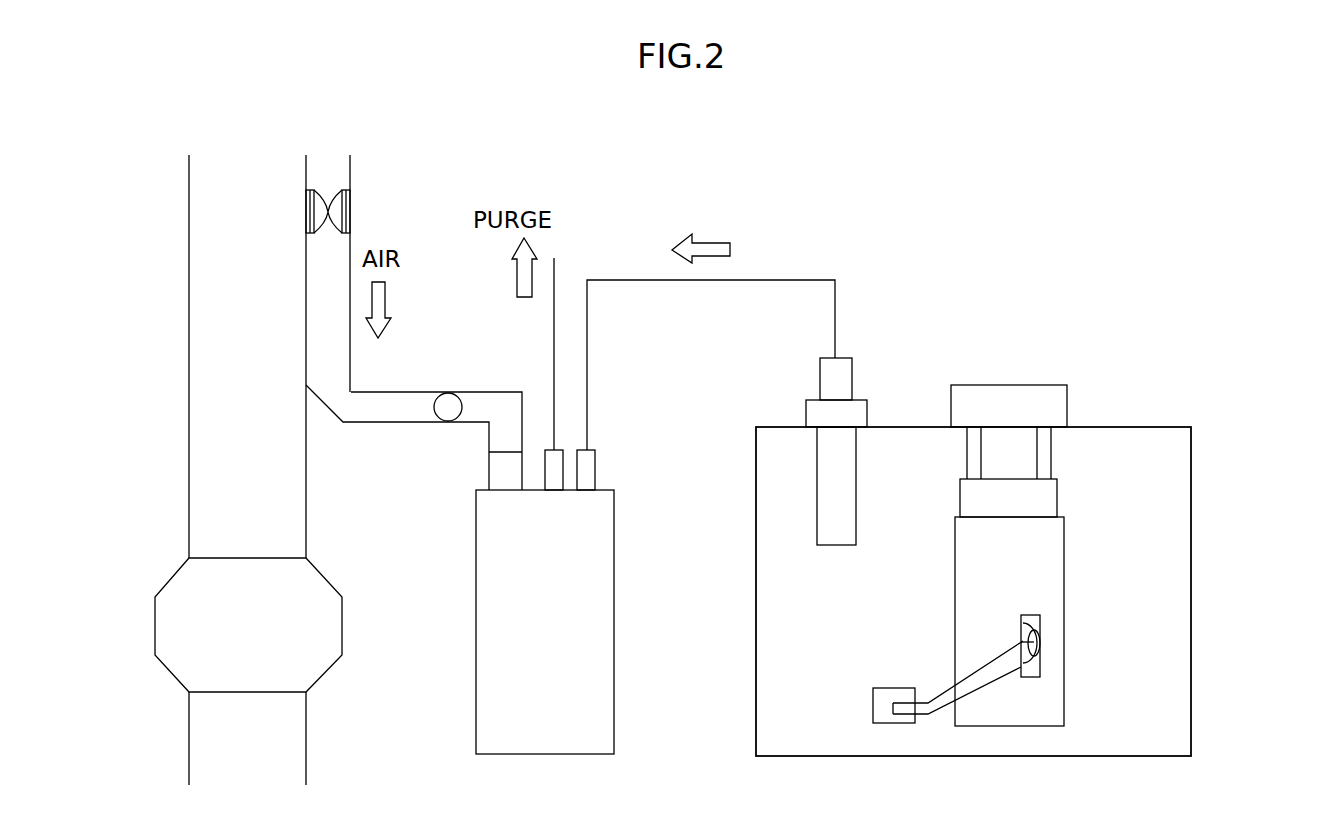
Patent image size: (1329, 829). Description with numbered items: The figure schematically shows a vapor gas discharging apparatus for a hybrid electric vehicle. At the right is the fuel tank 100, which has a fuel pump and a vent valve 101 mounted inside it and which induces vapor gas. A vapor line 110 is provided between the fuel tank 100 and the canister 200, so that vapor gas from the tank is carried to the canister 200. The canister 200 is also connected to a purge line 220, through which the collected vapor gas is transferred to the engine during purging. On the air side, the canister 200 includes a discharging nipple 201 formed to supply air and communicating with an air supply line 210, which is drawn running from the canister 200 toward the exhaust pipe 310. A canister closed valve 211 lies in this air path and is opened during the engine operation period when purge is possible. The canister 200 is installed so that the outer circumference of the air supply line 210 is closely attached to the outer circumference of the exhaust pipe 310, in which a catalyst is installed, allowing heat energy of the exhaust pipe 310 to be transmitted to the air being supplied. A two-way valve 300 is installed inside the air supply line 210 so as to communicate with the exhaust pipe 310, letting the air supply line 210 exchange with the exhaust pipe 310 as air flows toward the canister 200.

The fuel tank 100 is at (1191, 590).
The vent valve 101 is at (817, 485).
The vapor line 110 is at (770, 280).
The canister 200 is at (476, 622).
The discharging nipple 201 is at (489, 468).
The air supply line 210 is at (412, 392).
The canister closed valve (CCV) 211 is at (434, 407).
The purge line 220 is at (554, 290).
The two-way valve 300 is at (347, 197).
The exhaust pipe 310 is at (172, 577).